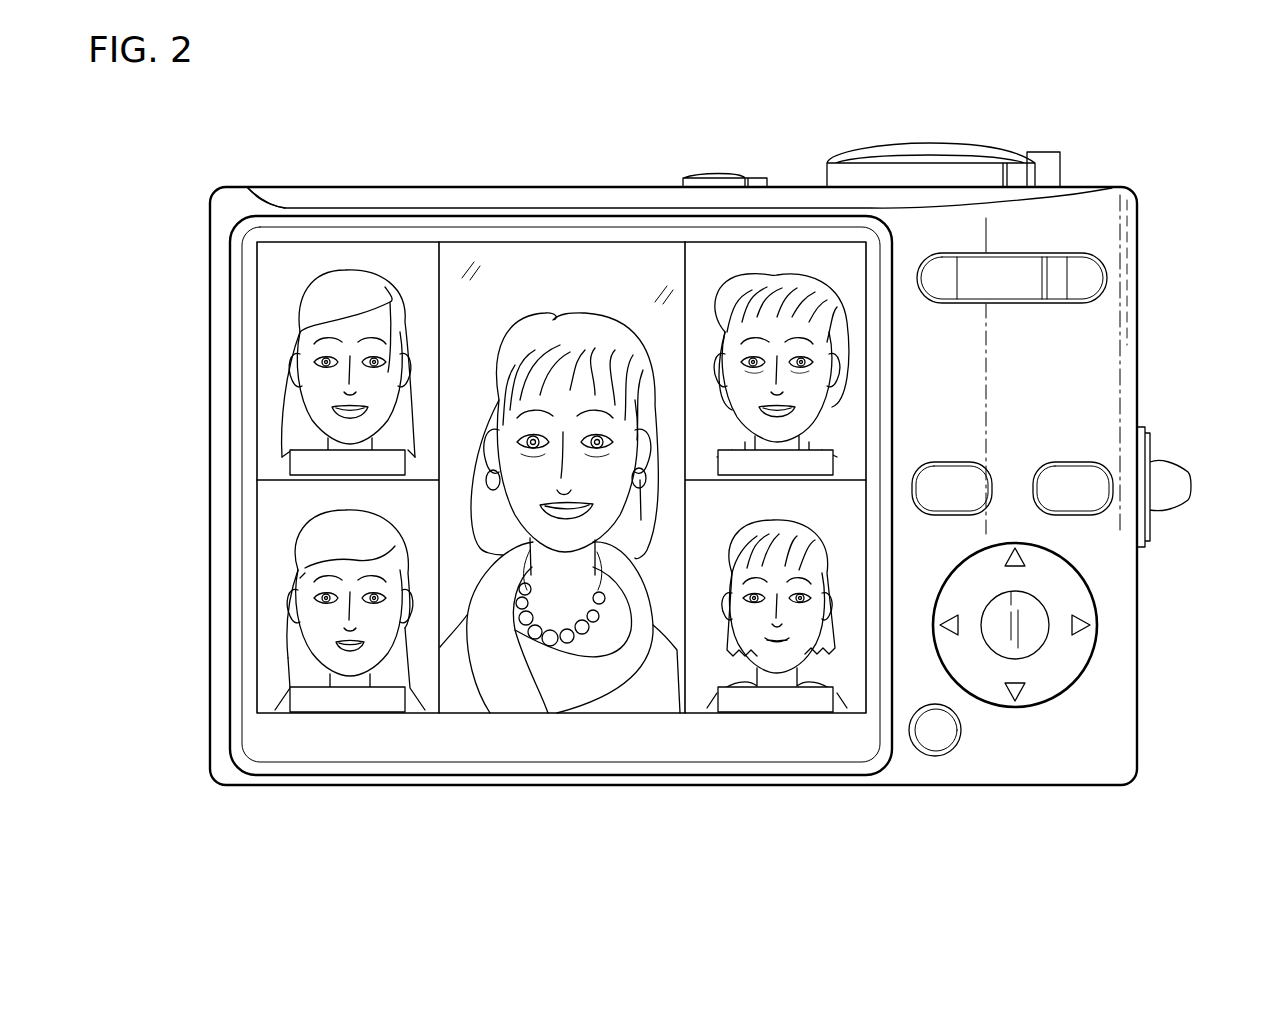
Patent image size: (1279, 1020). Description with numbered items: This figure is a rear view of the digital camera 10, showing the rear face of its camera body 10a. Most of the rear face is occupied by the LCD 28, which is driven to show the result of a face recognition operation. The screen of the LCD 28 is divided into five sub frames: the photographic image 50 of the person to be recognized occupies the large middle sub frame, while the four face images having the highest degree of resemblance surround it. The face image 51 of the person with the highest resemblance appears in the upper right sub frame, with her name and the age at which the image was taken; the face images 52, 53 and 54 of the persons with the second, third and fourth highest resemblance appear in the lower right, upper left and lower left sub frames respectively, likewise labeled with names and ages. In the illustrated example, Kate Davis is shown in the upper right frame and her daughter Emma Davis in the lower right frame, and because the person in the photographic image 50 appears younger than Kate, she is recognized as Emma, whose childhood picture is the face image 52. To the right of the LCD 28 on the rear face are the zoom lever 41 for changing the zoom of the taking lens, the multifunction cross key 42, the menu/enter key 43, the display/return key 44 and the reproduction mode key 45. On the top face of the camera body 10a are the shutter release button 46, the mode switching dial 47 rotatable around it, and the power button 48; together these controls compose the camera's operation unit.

The digital camera 10 is at (303, 187).
The camera body 10a is at (266, 786).
The LCD 28 is at (515, 272).
The zoom lever 41 is at (1093, 281).
The multifunction cross key 42 is at (1077, 657).
The menu/enter key 43 is at (1027, 637).
The display/return key 44 is at (935, 730).
The reproduction mode key 45 is at (953, 483).
The shutter release button 46 is at (923, 142).
The mode switching dial 47 is at (1043, 151).
The power button 48 is at (720, 176).
The photographic image 50 is at (578, 338).
The face image 51 is at (803, 395).
The face image 52 is at (803, 623).
The face image 53 is at (322, 392).
The face image 54 is at (322, 627).